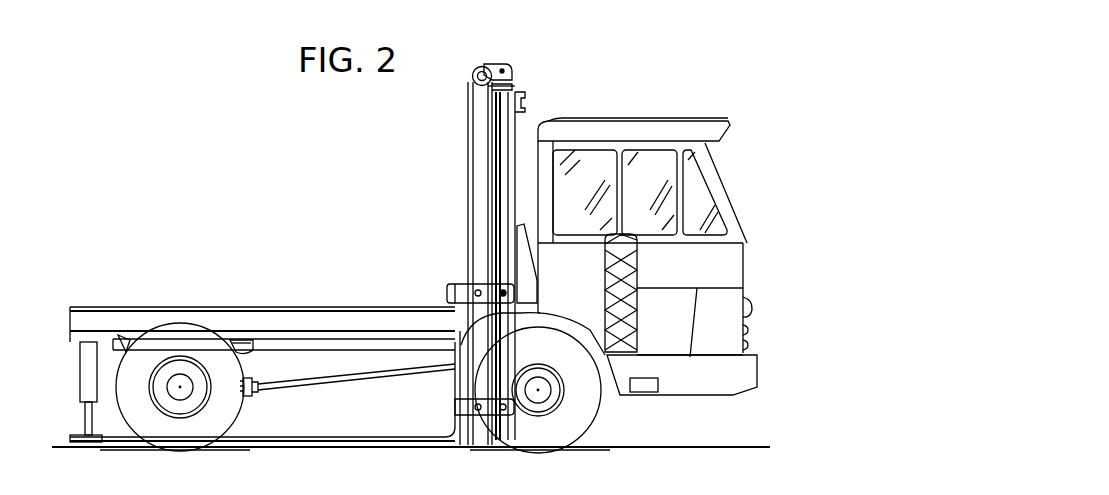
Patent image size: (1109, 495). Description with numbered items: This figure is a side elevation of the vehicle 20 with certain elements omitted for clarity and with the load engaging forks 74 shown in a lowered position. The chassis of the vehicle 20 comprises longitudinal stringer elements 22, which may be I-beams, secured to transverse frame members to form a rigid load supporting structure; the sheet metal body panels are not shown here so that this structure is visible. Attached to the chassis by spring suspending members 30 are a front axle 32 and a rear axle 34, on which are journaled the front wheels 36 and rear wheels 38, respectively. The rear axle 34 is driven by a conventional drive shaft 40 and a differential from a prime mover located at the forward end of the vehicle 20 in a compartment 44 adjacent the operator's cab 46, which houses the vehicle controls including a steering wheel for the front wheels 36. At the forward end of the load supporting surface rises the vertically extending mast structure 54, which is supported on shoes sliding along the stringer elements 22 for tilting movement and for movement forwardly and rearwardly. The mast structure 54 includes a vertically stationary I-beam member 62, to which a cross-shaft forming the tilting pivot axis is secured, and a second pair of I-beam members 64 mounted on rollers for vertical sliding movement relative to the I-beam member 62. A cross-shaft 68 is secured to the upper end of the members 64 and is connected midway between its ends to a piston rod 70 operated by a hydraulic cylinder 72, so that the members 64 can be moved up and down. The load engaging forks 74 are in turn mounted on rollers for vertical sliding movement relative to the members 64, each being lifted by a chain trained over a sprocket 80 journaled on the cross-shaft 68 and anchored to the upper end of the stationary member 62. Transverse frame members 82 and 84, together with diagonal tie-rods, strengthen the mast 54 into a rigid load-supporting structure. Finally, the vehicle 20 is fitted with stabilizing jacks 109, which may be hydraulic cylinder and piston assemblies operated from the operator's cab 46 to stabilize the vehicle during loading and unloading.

The vehicle 20 is at (658, 234).
The longitudinal stringer elements 22 is at (283, 309).
The spring suspending members 30 is at (253, 353).
The front axle 32 is at (545, 395).
The rear axle 34 is at (178, 388).
The front wheels 36 is at (588, 420).
The rear wheels 38 is at (238, 409).
The drive shaft 40 is at (338, 385).
The compartment 44 is at (732, 271).
The operator's cab 46 is at (643, 124).
The mast structure 54 is at (460, 263).
The I-beam member 62 is at (510, 349).
The I-beam members 64 is at (478, 252).
The cross-shaft 68 is at (476, 69).
The piston rod 70 is at (512, 66).
The hydraulic cylinder 72 is at (512, 86).
The load engaging forks 74 is at (396, 438).
The sprocket 80 is at (472, 78).
The transverse frame member 82 is at (447, 296).
The transverse frame member 84 is at (525, 97).
The stabilizing jacks 109 is at (80, 373).